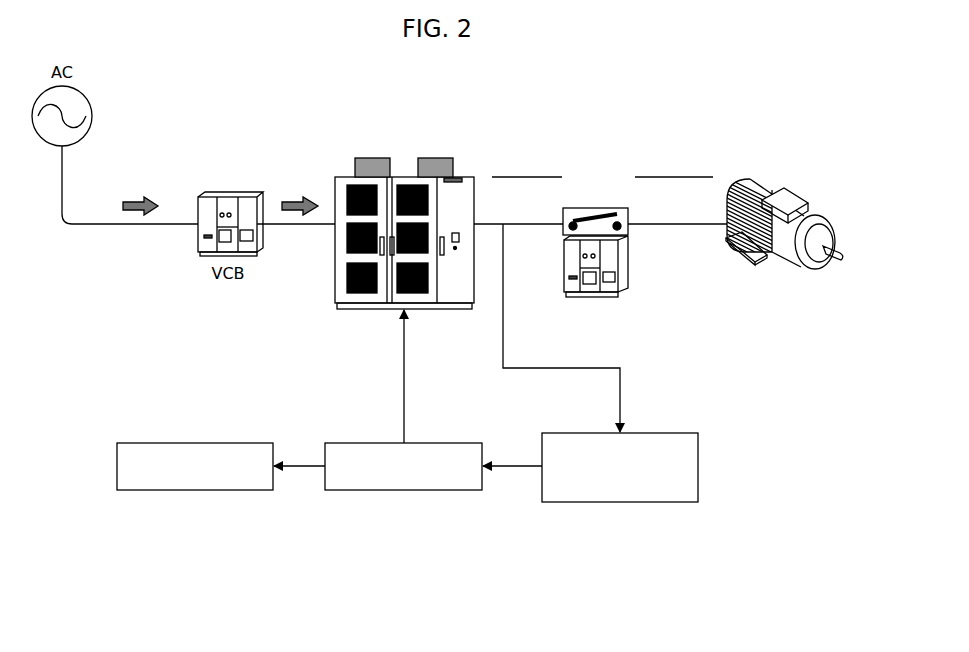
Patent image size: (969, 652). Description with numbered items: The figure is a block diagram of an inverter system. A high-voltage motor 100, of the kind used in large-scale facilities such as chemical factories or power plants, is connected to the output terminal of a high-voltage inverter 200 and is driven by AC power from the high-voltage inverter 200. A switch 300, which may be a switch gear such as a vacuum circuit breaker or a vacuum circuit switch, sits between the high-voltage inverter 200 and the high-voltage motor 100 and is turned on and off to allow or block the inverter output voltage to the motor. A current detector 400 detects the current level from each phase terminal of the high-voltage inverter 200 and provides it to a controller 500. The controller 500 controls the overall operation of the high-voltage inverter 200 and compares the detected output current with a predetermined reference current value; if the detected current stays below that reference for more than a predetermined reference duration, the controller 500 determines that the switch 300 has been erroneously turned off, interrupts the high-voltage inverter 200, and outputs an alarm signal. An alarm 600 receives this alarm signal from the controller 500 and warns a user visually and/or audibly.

The high-voltage motor 100 is at (758, 180).
The high-voltage inverter 200 is at (405, 177).
The switch 300 is at (597, 208).
The current detector 400 is at (621, 503).
The controller 500 is at (404, 491).
The alarm 600 is at (196, 491).